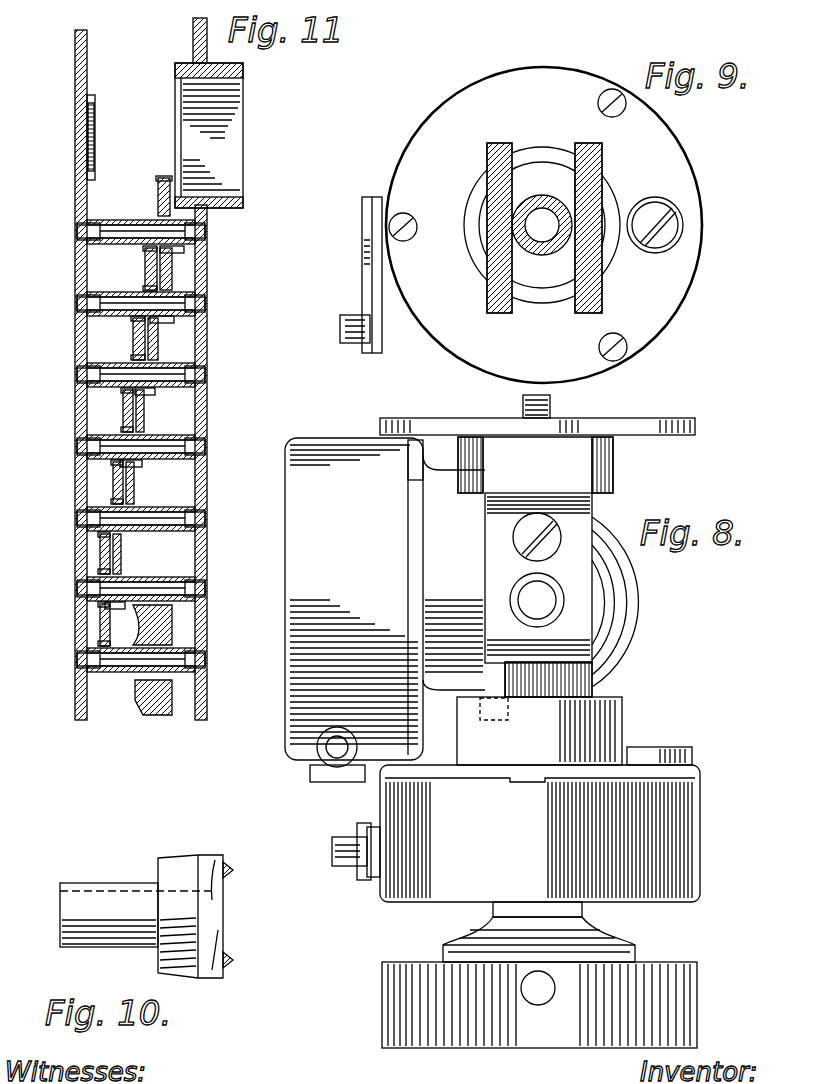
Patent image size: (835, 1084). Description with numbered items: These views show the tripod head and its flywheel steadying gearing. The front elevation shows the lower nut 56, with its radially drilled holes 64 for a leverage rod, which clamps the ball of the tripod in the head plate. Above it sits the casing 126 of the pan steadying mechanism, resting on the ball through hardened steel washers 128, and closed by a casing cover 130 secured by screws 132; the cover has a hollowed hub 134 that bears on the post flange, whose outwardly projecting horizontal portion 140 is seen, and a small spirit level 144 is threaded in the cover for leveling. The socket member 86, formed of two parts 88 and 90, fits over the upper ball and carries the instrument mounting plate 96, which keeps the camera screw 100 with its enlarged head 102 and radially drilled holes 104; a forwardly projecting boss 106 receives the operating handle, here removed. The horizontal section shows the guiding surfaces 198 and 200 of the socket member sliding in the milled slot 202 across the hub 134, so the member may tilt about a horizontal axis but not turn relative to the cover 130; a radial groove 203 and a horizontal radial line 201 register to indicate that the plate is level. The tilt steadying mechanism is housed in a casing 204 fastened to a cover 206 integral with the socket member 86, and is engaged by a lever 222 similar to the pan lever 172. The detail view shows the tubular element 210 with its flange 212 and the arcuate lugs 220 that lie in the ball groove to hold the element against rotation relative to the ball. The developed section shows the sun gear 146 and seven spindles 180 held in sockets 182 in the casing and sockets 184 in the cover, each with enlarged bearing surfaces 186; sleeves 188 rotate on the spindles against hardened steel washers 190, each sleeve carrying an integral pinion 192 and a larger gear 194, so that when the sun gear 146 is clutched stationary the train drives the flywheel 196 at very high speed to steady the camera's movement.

In FIG. 8, the nut 56 is at (382, 1024).
In FIG. 8, the radially drilled holes 64 is at (538, 988).
In FIG. 8, the socket member 86 is at (572, 465).
In FIG. 8, the socket member part 88 is at (560, 568).
In FIG. 8, the socket member part 90 is at (580, 580).
In FIG. 8, the instrument mounting plate 96 is at (650, 420).
In FIG. 8, the screw 100 is at (550, 405).
In FIG. 8, the enlarged head 102 is at (613, 472).
In FIG. 8, the radially drilled holes 104 is at (553, 520).
In FIG. 8, the boss 106 is at (537, 575).
In FIG. 11, the casing 126 is at (80, 497).
In FIG. 8, the casing 126 is at (445, 885).
In FIG. 8, the hardened steel washers 128 is at (585, 905).
In FIG. 11, the casing cover 130 is at (207, 480).
In FIG. 9, the casing cover 130 is at (655, 322).
In FIG. 8, the casing cover 130 is at (697, 770).
In FIG. 9, the screws 132 is at (626, 106).
In FIG. 8, the hub 134 is at (600, 741).
In FIG. 8, the horizontal portion 140 is at (685, 748).
In FIG. 9, the spirit level 144 is at (684, 235).
In FIG. 11, the sun gear 146 is at (176, 70).
In FIG. 9, the lever 172 is at (362, 292).
In FIG. 8, the lever 172 is at (365, 873).
In FIG. 11, the spindles 180 is at (80, 591).
In FIG. 11, the sockets 182 is at (77, 322).
In FIG. 11, the sockets 184 is at (210, 286).
In FIG. 11, the bearing surfaces 186 is at (207, 224).
In FIG. 11, the sleeves 188 is at (178, 640).
In FIG. 11, the hardened steel washers 190 is at (87, 222).
In FIG. 11, the pinion 192 is at (180, 250).
In FIG. 11, the gear 194 is at (158, 194).
In FIG. 11, the flywheel 196 is at (148, 706).
In FIG. 8, the guiding surface 198 is at (470, 628).
In FIG. 8, the guiding surface 200 is at (597, 692).
In FIG. 9, the horizontal radial line 201 is at (672, 206).
In FIG. 9, the slot 202 is at (487, 195).
In FIG. 8, the slot 202 is at (620, 698).
In FIG. 9, the radial groove 203 is at (660, 198).
In FIG. 8, the casing 204 is at (322, 462).
In FIG. 8, the cover 206 is at (420, 452).
In FIG. 10, the tubular element 210 is at (88, 900).
In FIG. 10, the flange 212 is at (170, 856).
In FIG. 10, the arcuate lugs 220 is at (233, 869).
In FIG. 8, the lever 222 is at (312, 762).